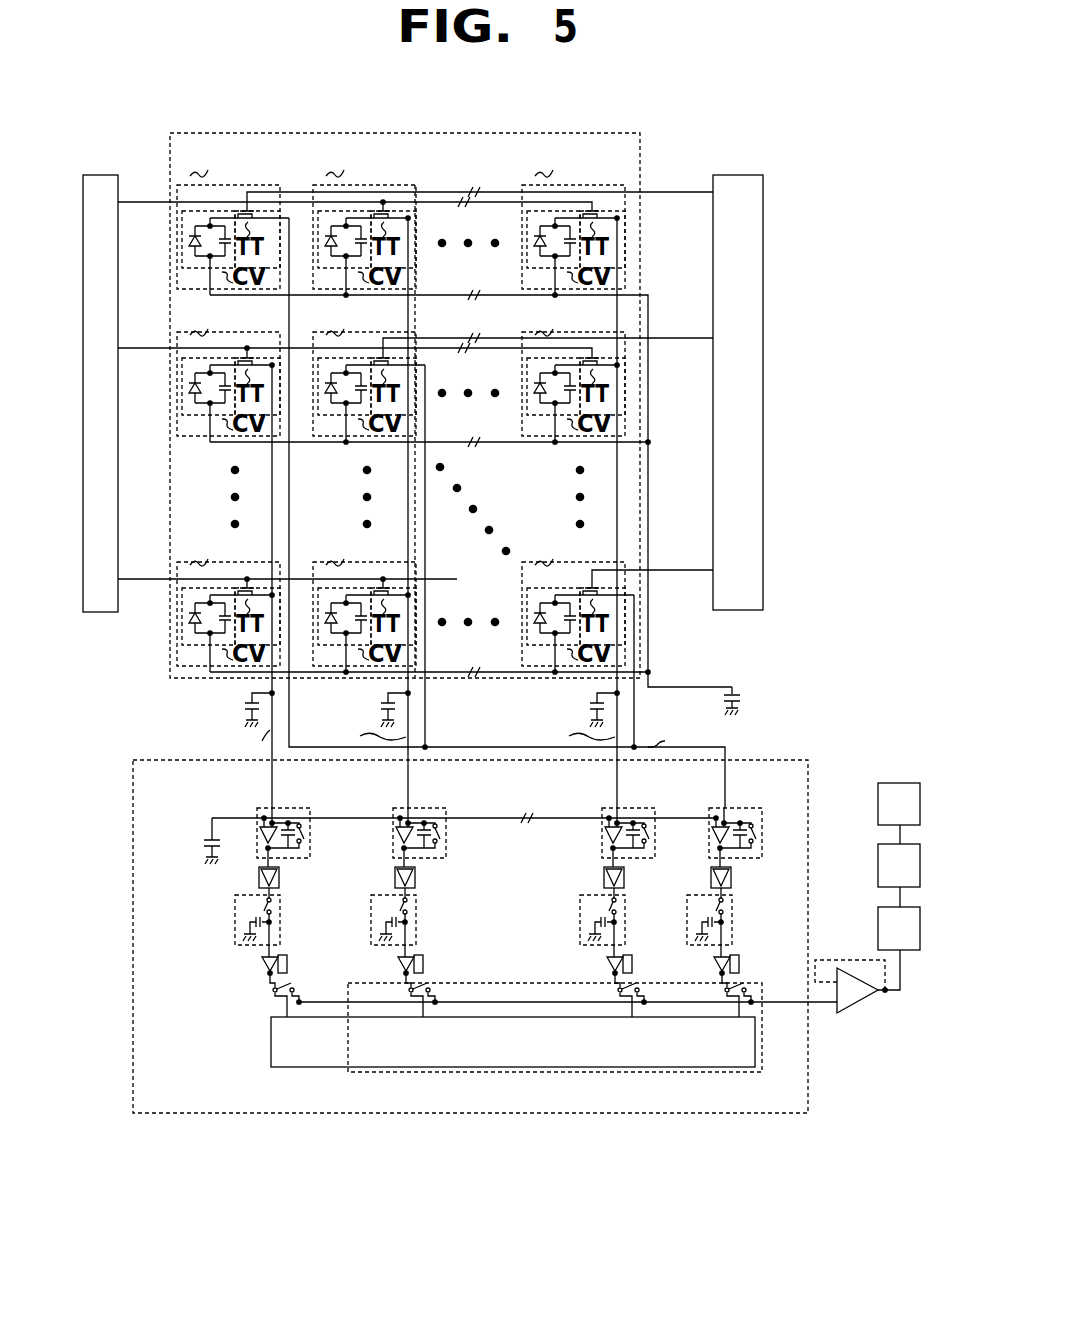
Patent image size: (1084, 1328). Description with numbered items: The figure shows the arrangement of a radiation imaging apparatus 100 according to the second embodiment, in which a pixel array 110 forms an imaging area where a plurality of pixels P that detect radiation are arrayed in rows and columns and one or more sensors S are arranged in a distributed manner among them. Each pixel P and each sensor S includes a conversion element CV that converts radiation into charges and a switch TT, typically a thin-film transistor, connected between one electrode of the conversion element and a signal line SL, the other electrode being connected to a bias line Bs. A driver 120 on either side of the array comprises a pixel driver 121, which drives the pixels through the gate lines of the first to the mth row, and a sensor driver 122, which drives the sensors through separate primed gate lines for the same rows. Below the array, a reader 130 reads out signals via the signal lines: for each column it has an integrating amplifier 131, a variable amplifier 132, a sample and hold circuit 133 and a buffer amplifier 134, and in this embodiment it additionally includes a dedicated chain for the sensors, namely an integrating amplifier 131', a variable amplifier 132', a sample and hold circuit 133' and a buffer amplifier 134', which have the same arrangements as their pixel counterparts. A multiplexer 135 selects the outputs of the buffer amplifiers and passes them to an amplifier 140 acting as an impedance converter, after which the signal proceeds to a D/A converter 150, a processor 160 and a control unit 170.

The radiation imaging apparatus 100 is at (386, 1186).
The pixel array 110 is at (410, 118).
The driver 120 is at (140, 104).
The pixel driver 121 is at (96, 175).
The sensor driver 122 is at (732, 175).
The reader 130 is at (470, 1115).
The integrating amplifier 131 is at (459, 819).
The integrating amplifier 131' is at (743, 819).
The variable amplifier 132 is at (469, 881).
The variable amplifier 132' is at (752, 881).
The sample and hold circuit 133 is at (458, 926).
The sample and hold circuit 133' is at (741, 926).
The buffer amplifier 134 is at (474, 983).
The buffer amplifier 134' is at (757, 983).
The multiplexer 135 is at (690, 1073).
The amplifier 140 is at (852, 1002).
The D/A converter 150 is at (878, 922).
The processor 160 is at (878, 858).
The control unit 170 is at (878, 798).